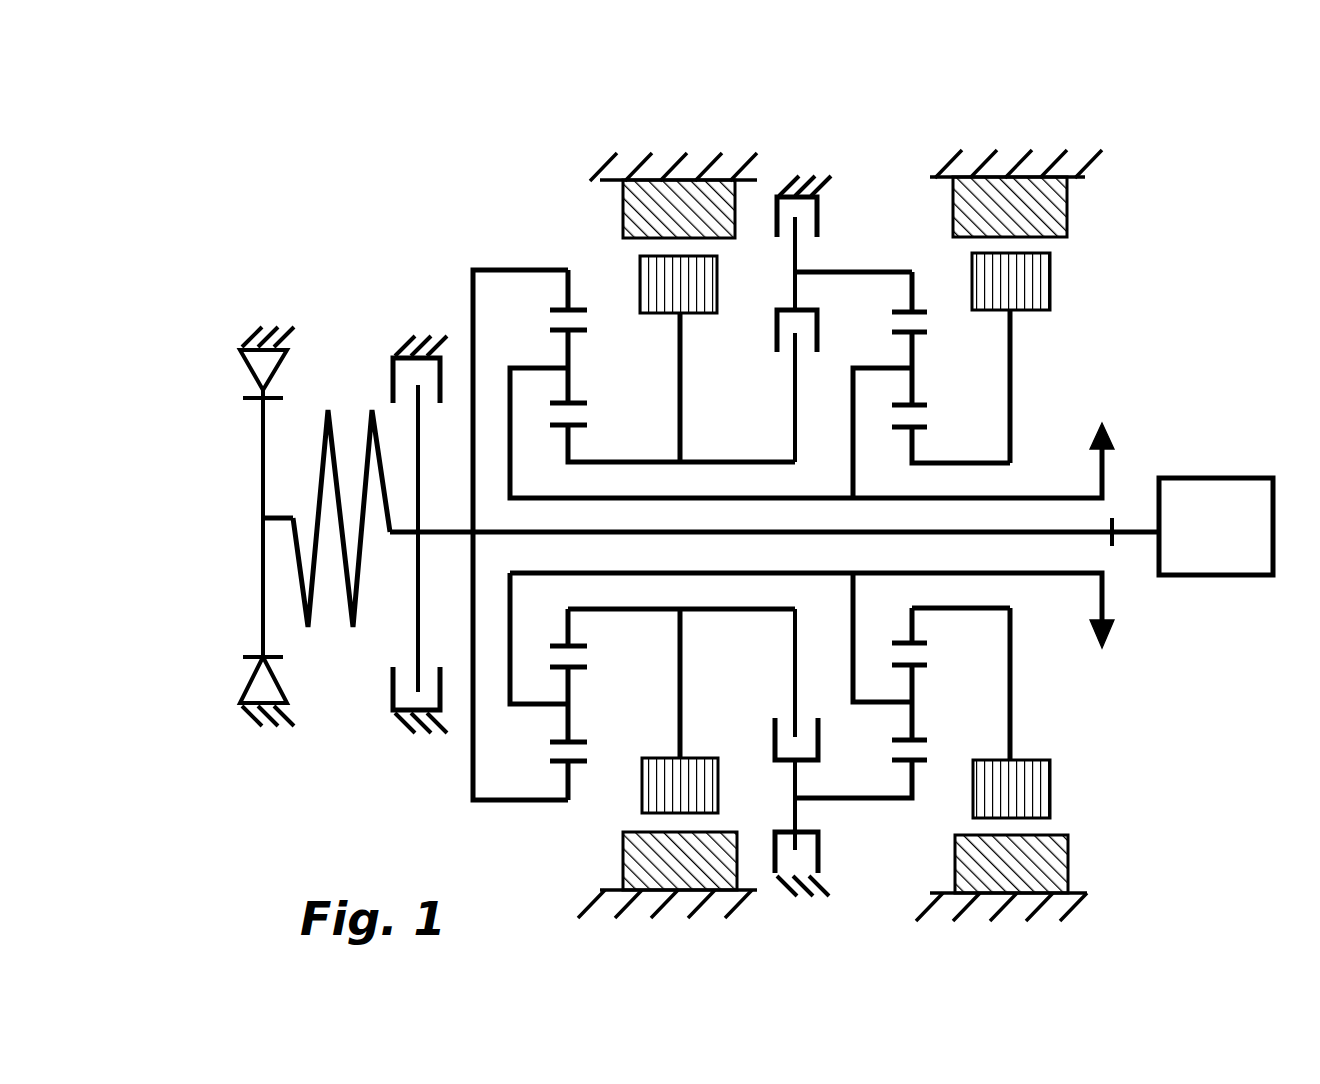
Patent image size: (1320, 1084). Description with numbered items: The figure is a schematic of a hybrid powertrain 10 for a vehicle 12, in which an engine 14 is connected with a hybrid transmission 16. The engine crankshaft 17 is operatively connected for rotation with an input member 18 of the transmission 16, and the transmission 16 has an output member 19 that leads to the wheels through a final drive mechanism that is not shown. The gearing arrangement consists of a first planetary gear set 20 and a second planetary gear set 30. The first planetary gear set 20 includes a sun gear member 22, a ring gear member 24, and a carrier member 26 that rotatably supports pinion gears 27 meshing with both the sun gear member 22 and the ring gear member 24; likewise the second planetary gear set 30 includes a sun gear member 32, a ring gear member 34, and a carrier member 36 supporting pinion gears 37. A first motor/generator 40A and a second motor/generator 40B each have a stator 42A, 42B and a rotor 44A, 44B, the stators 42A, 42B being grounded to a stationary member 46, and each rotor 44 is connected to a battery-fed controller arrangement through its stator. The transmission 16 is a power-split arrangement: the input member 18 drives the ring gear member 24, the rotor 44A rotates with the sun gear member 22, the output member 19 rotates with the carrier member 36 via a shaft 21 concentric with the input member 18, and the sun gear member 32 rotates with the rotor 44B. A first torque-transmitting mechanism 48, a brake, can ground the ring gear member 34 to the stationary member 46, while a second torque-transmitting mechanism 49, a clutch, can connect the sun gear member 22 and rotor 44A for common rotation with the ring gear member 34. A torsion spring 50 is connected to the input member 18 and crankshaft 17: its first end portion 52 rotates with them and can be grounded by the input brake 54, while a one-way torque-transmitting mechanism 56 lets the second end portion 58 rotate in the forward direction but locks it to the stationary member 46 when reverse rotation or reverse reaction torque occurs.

The hybrid powertrain 10 is at (1123, 253).
The vehicle 12 is at (1140, 130).
The engine 14 is at (1216, 526).
The hybrid transmission 16 is at (517, 189).
The engine crankshaft 17 is at (1130, 525).
The input member 18 is at (1068, 540).
The output member 19 is at (1100, 455).
The first planetary gear set 20 is at (611, 572).
The shaft 21 is at (1043, 497).
The sun gear member 22 is at (578, 646).
The ring gear member 24 is at (585, 763).
The carrier member 26 is at (530, 704).
The pinion gears 27 is at (578, 726).
The second planetary gear set 30 is at (892, 580).
The sun gear member 32 is at (920, 646).
The ring gear member 34 is at (920, 762).
The carrier member 36 is at (883, 703).
The pinion gears 37 is at (920, 722).
The first motor/generator 40A is at (607, 300).
The second motor/generator 40B is at (1038, 312).
The stator 42A is at (623, 205).
The stator 42B is at (953, 215).
The rotor 44 is at (1052, 786).
The rotor 44A is at (665, 318).
The rotor 44B is at (1050, 292).
The stationary member 46 is at (758, 171).
The first torque-transmitting mechanism 48 is at (781, 238).
The second torque-transmitting mechanism 49 is at (781, 362).
The torsion spring 50 is at (338, 658).
The first end portion 52 is at (401, 528).
The input brake 54 is at (391, 630).
The one-way torque-transmitting mechanism 56 is at (226, 668).
The second end portion 58 is at (283, 520).